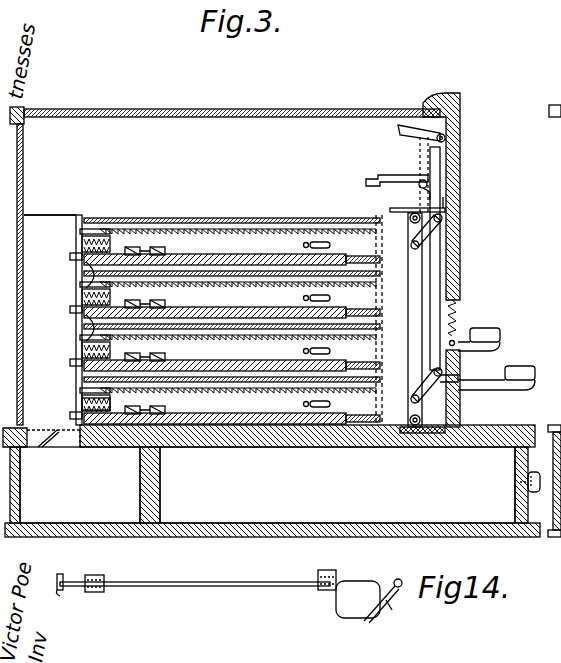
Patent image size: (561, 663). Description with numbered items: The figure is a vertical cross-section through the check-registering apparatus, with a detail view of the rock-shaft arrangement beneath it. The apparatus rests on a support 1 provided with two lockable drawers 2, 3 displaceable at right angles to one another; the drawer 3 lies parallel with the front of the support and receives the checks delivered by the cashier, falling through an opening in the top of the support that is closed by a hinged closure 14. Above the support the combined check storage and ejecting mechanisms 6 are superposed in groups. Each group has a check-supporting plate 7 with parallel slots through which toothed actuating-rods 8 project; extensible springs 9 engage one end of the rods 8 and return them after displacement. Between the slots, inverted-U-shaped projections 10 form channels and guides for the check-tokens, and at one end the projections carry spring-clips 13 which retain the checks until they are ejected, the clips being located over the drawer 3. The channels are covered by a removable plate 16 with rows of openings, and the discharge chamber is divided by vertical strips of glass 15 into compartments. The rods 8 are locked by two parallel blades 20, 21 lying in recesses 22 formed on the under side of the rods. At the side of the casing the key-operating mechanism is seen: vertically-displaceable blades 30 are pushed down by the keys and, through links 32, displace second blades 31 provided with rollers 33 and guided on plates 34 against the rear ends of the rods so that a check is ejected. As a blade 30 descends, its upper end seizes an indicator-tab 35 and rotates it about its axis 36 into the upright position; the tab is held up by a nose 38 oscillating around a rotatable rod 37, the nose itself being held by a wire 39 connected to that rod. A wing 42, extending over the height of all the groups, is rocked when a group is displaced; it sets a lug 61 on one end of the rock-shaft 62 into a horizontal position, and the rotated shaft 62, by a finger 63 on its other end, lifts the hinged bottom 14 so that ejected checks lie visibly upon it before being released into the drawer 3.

In FIG. 3, the support 1 is at (154, 528).
In FIG. 3, the drawer 2 is at (337, 485).
In FIG. 3, the drawer 3 is at (80, 485).
In FIG. 3, the combined check storage and ejecting mechanism 6 is at (315, 243).
In FIG. 3, the check-supporting plate 7 is at (88, 266).
In FIG. 3, the toothed actuating-rod 8 is at (237, 245).
In FIG. 3, the extensible spring 9 is at (82, 246).
In FIG. 3, the inverted-U-shaped projection 10 is at (84, 401).
In FIG. 3, the spring-clip 13 is at (100, 228).
In FIG. 3, the closure 14 is at (52, 440).
In FIG. 3, the vertical strip of glass 15 is at (50, 207).
In FIG. 3, the removable plate 16 is at (186, 219).
In FIG. 3, the blade 20 is at (127, 422).
In FIG. 3, the blade 21 is at (167, 422).
In FIG. 3, the recess 22 is at (147, 247).
In FIG. 3, the vertically-displaceable blade 30 is at (438, 275).
In FIG. 3, the second blade 31 is at (418, 302).
In FIG. 3, the link 32 is at (440, 237).
In FIG. 3, the roller 33 is at (410, 213).
In FIG. 3, the plate 34 is at (436, 208).
In FIG. 3, the indicator-tab 35 is at (397, 177).
In FIG. 3, the axis 36 is at (432, 188).
In FIG. 3, the rotatable rod 37 is at (430, 182).
In FIG. 3, the nose 38 is at (416, 126).
In FIG. 3, the wire 39 is at (400, 130).
In FIG. 14, the wing 42 is at (387, 606).
In FIG. 14, the lug 61 is at (358, 595).
In FIG. 14, the rock-shaft 62 is at (240, 584).
In FIG. 14, the finger 63 is at (51, 592).